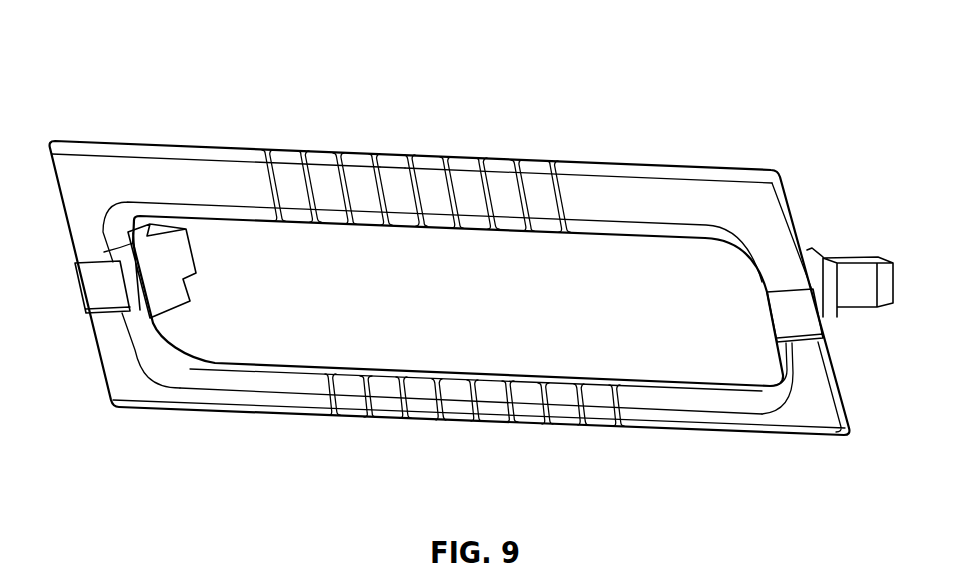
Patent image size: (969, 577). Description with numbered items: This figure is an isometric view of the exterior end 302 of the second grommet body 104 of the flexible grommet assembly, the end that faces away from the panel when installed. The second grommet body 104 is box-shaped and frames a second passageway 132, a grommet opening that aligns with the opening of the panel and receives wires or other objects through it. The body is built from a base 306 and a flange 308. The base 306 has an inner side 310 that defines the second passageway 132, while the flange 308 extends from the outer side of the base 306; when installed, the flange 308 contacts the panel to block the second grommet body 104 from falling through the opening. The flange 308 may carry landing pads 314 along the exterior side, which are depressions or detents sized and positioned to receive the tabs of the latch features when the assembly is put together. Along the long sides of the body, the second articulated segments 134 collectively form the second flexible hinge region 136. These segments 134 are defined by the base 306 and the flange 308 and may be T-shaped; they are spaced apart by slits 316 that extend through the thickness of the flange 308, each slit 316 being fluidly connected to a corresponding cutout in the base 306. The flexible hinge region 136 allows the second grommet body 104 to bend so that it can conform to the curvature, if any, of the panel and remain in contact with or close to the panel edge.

The second grommet body 104 is at (112, 72).
The second passageway 132 is at (658, 247).
The second articulated segments 134 is at (328, 187).
The second flexible hinge region 136 is at (390, 150).
The exterior end 302 is at (66, 193).
The base 306 is at (152, 322).
The flange 308 is at (218, 190).
The inner side 310 is at (704, 392).
The landing pads 314 is at (102, 285).
The slits 316 is at (560, 192).